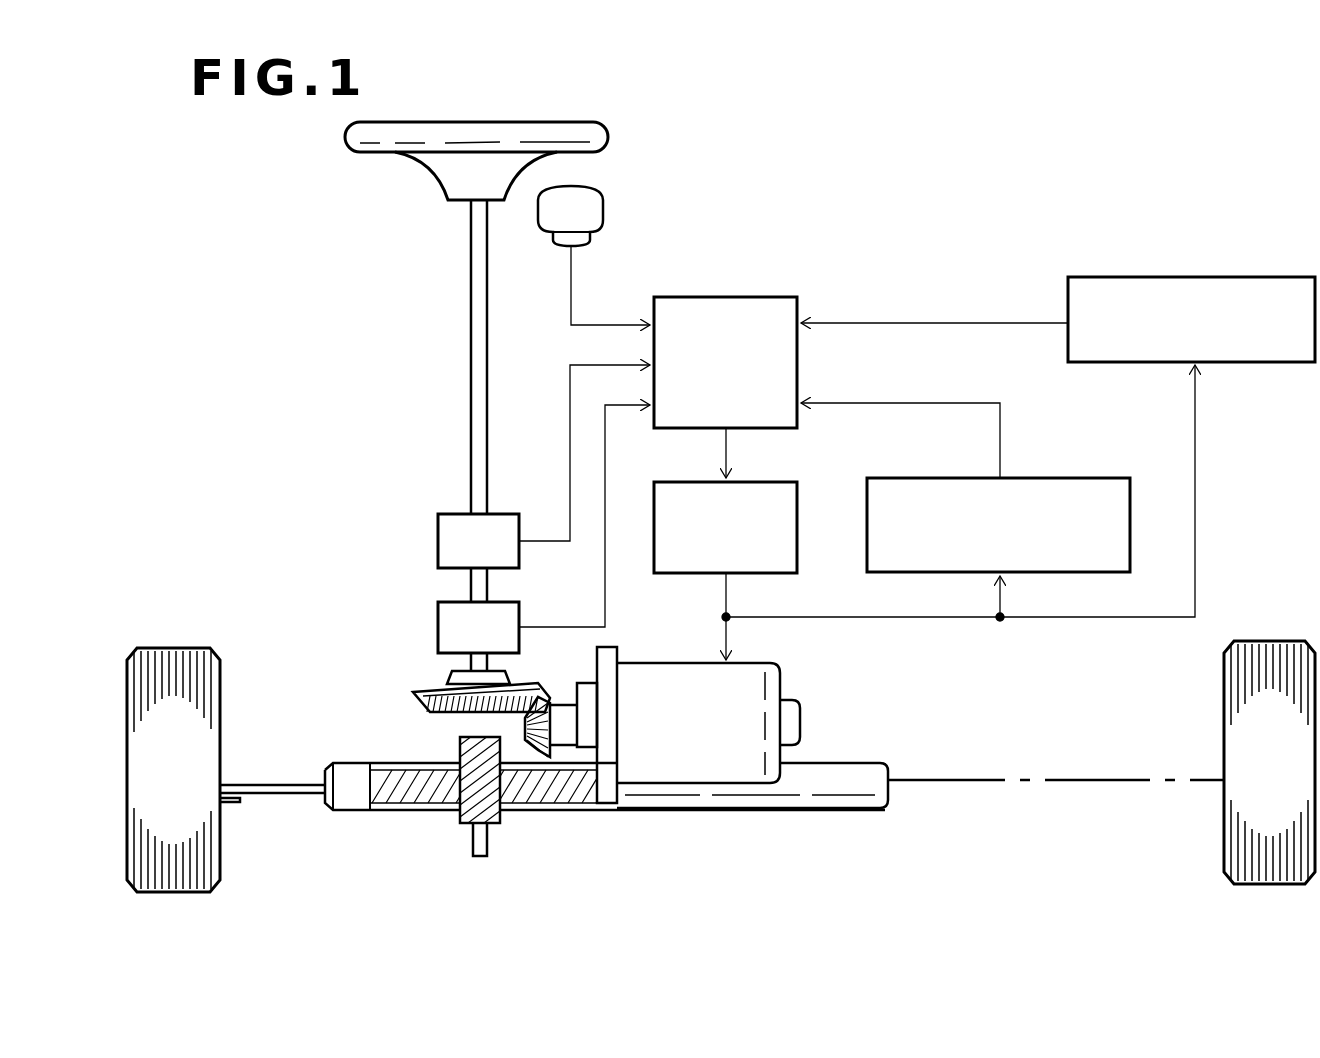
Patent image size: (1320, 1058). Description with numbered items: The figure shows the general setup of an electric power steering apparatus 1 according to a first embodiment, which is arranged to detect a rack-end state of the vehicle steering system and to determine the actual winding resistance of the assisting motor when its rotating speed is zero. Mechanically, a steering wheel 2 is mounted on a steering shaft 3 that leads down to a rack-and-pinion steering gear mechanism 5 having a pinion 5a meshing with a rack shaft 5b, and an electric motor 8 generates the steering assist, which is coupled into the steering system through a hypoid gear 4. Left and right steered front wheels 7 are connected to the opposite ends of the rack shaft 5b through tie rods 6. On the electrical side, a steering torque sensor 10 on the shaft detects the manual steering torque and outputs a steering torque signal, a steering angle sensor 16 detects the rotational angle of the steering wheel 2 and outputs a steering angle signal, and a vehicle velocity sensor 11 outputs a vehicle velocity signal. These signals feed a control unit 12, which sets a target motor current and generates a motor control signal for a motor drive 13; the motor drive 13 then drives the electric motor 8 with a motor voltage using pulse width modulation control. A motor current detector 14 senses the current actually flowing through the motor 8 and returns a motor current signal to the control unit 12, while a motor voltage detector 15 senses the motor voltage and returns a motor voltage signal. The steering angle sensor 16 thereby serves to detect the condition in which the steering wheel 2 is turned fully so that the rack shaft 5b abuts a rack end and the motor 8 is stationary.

The electric power steering apparatus 1 is at (262, 222).
The steering wheel 2 is at (535, 122).
The steering shaft 3 is at (470, 385).
The hypoid gear 4 is at (527, 750).
The rack-and-pinion steering gear mechanism 5 is at (444, 825).
The pinion 5a is at (503, 818).
The rack shaft 5b is at (830, 780).
The tie rods 6 is at (287, 800).
The steered front wheels 7 is at (170, 648).
The electric motor 8 is at (780, 678).
The steering torque sensor 10 is at (438, 628).
The vehicle velocity sensor 11 is at (610, 200).
The control unit 12 is at (735, 297).
The motor drive 13 is at (770, 482).
The motor current detector 14 is at (1040, 478).
The motor voltage detector 15 is at (1232, 277).
The steering angle sensor 16 is at (460, 514).